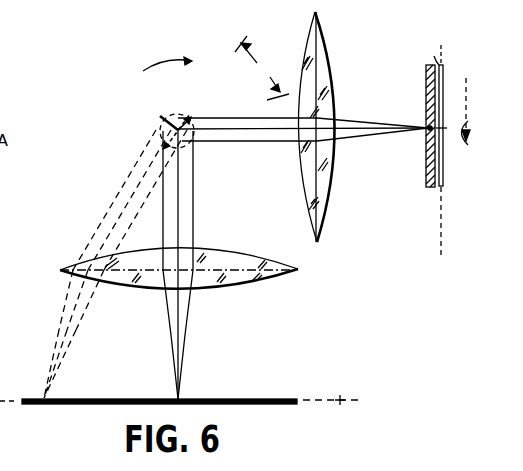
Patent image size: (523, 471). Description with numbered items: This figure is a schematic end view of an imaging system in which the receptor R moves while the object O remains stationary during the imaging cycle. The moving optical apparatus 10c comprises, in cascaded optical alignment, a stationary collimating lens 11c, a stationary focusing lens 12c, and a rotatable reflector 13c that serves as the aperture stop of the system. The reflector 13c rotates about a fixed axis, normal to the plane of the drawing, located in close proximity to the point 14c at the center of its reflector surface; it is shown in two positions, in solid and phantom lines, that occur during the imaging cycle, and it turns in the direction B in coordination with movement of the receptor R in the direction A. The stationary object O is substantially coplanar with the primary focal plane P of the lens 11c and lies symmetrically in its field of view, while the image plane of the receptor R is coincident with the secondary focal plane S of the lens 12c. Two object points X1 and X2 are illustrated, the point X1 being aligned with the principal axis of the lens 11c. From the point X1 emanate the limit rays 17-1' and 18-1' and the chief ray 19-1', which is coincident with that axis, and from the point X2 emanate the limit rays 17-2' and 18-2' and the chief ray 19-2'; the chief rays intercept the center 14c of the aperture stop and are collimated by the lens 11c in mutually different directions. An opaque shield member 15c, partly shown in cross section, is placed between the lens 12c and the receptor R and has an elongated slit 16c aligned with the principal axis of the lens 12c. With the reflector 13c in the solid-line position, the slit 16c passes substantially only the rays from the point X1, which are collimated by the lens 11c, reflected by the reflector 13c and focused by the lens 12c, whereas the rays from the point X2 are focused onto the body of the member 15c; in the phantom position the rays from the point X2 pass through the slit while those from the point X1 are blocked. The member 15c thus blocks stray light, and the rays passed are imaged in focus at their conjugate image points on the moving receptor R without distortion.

The moving optical apparatus 10c is at (248, 196).
The stationary collimating lens 11c is at (277, 280).
The stationary focusing lens 12c is at (332, 82).
The rotatable reflector 13c is at (190, 115).
The point on reflector surface 14c is at (164, 116).
The opaque shield member 15c is at (426, 172).
The elongated slit 16c is at (427, 126).
The light ray from point X1 17-1' is at (155, 367).
The light ray from point X2 17-2' is at (48, 345).
The light ray from point X1 18-1' is at (201, 306).
The light ray from point X2 18-2' is at (96, 306).
The chief ray of point X1 19-1' is at (205, 264).
The chief ray of point X2 19-2' is at (127, 200).
The receptor movement direction A is at (466, 120).
The reflector rotation direction B is at (167, 63).
The receptor R is at (430, 51).
The secondary focal plane S is at (440, 238).
The object O is at (283, 398).
The primary focal plane P is at (340, 397).
The object point X1 is at (177, 398).
The object point X2 is at (43, 397).